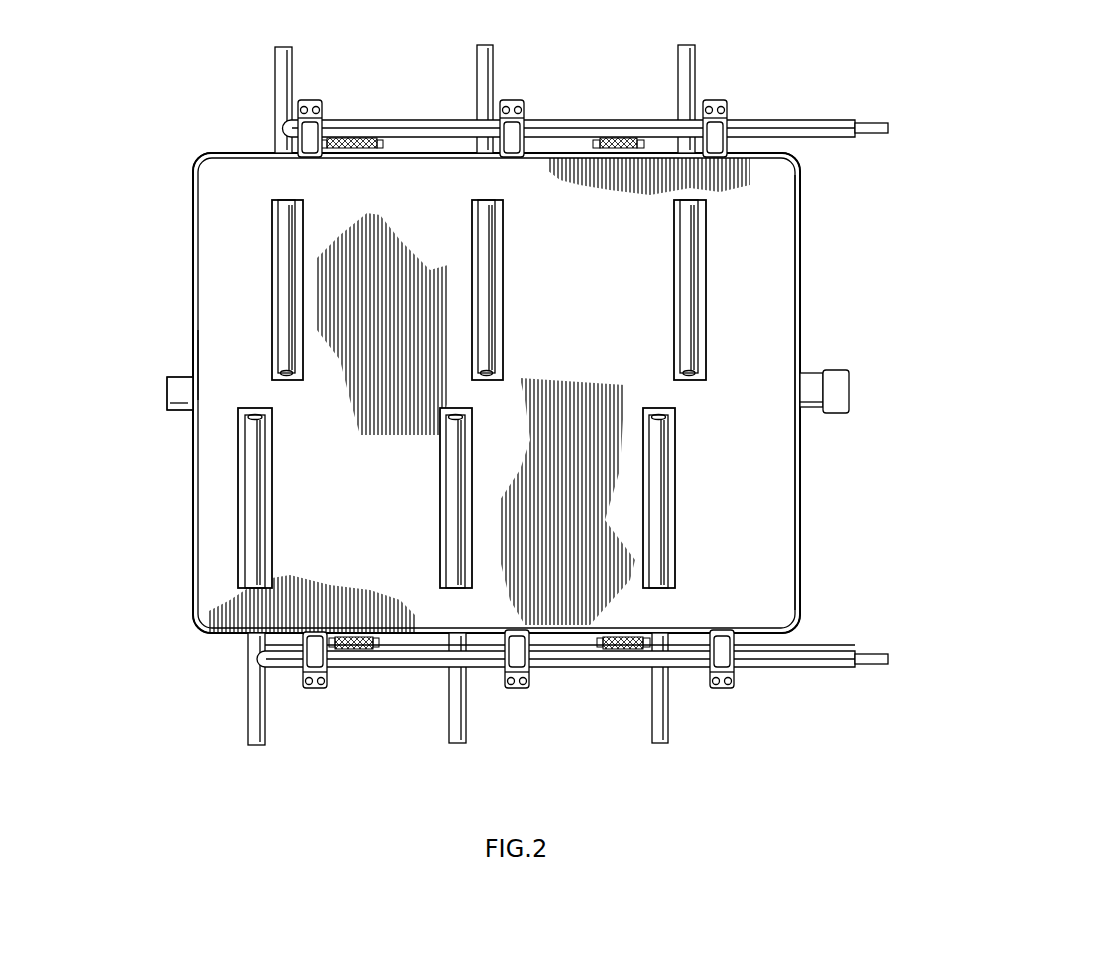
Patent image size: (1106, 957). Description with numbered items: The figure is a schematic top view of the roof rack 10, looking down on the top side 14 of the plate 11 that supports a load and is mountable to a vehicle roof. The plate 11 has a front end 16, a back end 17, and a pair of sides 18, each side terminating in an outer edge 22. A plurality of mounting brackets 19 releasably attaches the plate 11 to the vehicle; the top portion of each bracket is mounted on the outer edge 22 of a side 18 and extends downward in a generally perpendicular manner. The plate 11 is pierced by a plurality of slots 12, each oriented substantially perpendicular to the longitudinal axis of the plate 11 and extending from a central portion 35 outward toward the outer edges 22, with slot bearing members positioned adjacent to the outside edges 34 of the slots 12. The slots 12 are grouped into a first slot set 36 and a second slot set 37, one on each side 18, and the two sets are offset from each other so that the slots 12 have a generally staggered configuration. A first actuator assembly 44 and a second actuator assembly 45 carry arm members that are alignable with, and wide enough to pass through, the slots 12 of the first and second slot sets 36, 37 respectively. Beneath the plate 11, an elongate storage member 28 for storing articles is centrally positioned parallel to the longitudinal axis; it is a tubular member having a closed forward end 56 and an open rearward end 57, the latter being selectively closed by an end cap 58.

The roof rack 10 is at (978, 163).
The plate 11 is at (200, 153).
The slots 12 is at (275, 262).
The top side 14 is at (243, 177).
The front end 16 is at (193, 280).
The back end 17 is at (800, 275).
The sides 18 is at (768, 203).
The mounting brackets 19 is at (307, 127).
The outer edge 22 is at (228, 647).
The storage member 28 is at (183, 398).
The outside edges 34 is at (237, 575).
The central portion 35 is at (257, 390).
The first slot set 36 is at (272, 517).
The second slot set 37 is at (675, 252).
The first actuator assembly 44 is at (379, 690).
The second actuator assembly 45 is at (397, 115).
The closed forward end 56 is at (167, 393).
The open rearward end 57 is at (805, 385).
The end cap 58 is at (842, 387).